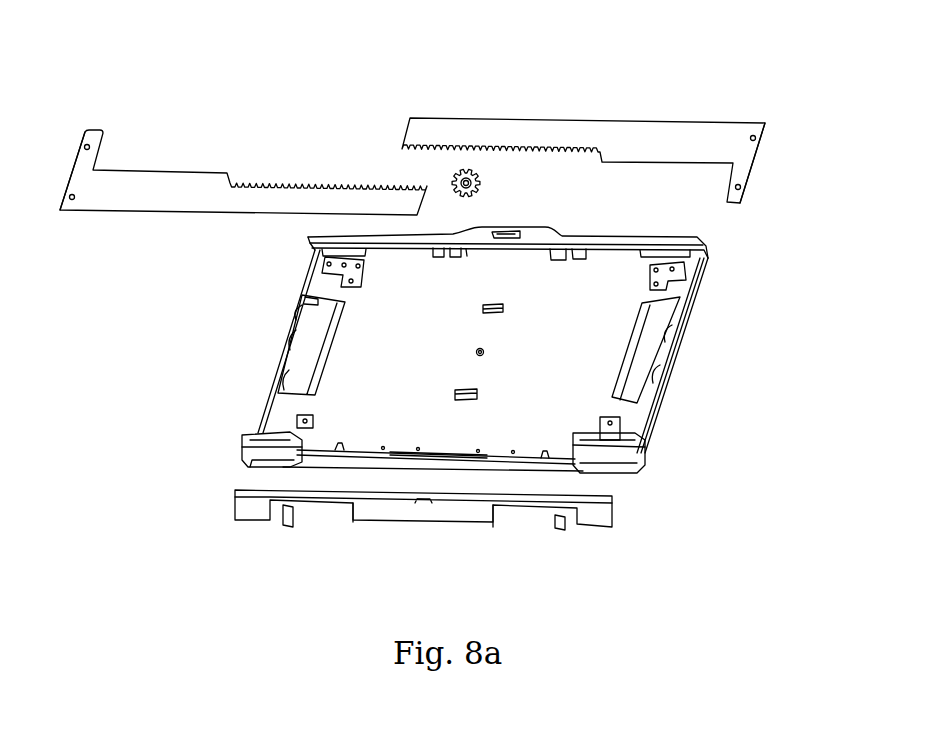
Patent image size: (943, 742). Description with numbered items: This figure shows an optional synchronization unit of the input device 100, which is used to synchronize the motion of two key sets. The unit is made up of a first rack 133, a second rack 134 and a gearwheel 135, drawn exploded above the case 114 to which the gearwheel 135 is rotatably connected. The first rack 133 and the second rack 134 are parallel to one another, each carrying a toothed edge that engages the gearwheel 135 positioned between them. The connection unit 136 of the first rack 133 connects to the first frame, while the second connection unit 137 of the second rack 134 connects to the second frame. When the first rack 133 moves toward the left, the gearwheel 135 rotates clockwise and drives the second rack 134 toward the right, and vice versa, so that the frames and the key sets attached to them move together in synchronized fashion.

The input device 100 is at (457, 44).
The case 114 is at (550, 237).
The first rack 133 is at (175, 203).
The second rack 134 is at (630, 130).
The gearwheel 135 is at (482, 183).
The connection unit 136 is at (83, 168).
The second connection unit 137 is at (748, 157).